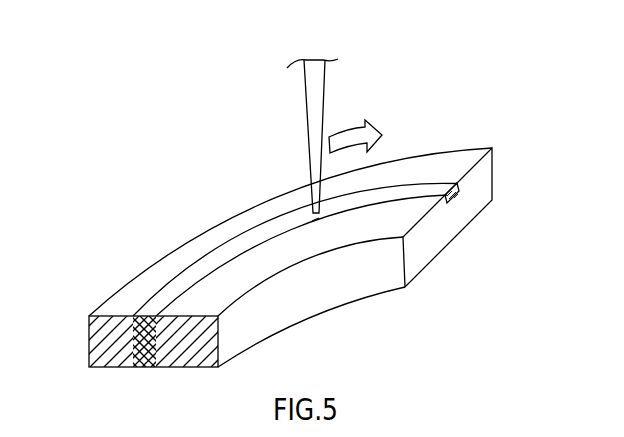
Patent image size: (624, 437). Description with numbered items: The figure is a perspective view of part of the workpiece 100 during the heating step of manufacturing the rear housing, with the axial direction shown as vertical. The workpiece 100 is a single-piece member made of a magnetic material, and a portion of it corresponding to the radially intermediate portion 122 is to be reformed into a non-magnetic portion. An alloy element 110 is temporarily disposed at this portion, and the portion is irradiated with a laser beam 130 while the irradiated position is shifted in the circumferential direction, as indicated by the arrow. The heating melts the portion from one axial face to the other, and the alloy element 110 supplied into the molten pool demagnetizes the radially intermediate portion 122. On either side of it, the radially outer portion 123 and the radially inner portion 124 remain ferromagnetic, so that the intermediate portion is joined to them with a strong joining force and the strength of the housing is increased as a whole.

The workpiece 100 is at (257, 215).
The alloy element 110 is at (428, 187).
The radially intermediate portion 122 is at (162, 297).
The radially outer portion 123 is at (115, 305).
The radially inner portion 124 is at (215, 292).
The laser beam 130 is at (312, 93).